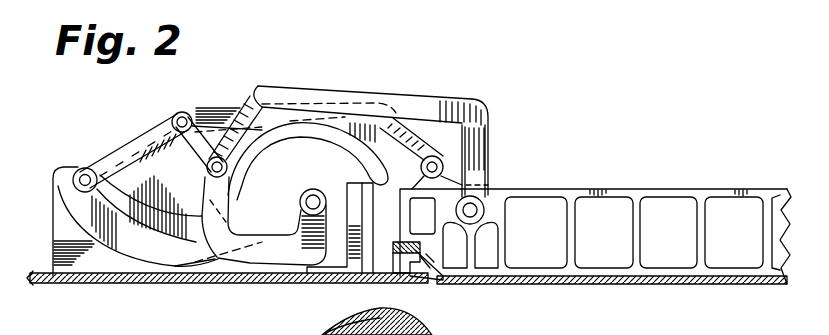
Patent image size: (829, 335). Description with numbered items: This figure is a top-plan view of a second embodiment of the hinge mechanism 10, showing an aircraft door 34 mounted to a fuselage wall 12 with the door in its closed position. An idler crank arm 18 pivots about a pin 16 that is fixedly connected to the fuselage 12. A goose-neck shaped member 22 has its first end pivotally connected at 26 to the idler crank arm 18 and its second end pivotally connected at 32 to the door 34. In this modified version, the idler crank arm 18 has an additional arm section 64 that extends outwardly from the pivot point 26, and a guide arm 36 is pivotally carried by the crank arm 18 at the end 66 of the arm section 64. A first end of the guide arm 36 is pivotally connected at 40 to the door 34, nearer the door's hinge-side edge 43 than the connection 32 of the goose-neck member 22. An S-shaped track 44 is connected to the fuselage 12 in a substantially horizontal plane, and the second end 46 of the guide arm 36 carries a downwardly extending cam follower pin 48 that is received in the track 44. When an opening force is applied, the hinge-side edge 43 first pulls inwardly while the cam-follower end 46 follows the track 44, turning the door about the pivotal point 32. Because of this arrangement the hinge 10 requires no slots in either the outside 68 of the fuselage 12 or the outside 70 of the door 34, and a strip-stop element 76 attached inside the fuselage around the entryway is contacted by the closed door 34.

The hinge mechanism 10 is at (420, 76).
The fuselage wall 12 is at (82, 284).
The pin 16 is at (308, 203).
The idler crank arm 18 is at (258, 266).
The goose-neck shaped member 22 is at (432, 105).
The pivot point 26 is at (270, 100).
The pivotal connection 32 is at (470, 210).
The aircraft door 34 is at (628, 188).
The guide arm 36 is at (152, 126).
The pivotal connection 40 is at (443, 166).
The hinge-side edge 43 is at (380, 214).
The S-shaped track 44 is at (148, 262).
The second end of guide arm 46 is at (72, 175).
The cam follower pin 48 is at (84, 168).
The arm section 64 is at (220, 156).
The end of arm section 66 is at (184, 112).
The outside of fuselage 68 is at (184, 284).
The outside of door 70 is at (586, 287).
The strip-stop element 76 is at (398, 282).